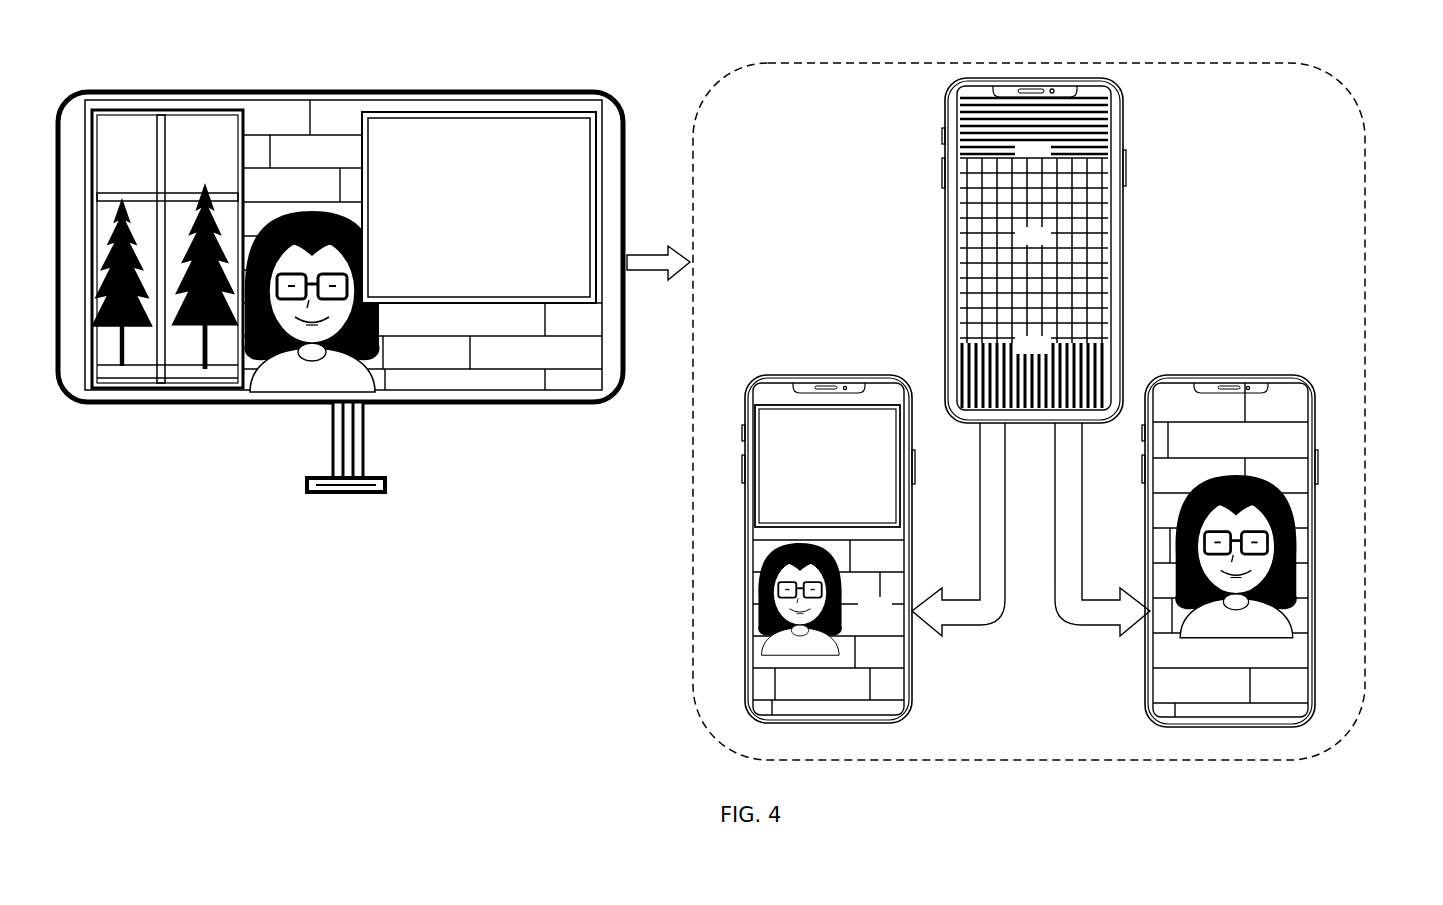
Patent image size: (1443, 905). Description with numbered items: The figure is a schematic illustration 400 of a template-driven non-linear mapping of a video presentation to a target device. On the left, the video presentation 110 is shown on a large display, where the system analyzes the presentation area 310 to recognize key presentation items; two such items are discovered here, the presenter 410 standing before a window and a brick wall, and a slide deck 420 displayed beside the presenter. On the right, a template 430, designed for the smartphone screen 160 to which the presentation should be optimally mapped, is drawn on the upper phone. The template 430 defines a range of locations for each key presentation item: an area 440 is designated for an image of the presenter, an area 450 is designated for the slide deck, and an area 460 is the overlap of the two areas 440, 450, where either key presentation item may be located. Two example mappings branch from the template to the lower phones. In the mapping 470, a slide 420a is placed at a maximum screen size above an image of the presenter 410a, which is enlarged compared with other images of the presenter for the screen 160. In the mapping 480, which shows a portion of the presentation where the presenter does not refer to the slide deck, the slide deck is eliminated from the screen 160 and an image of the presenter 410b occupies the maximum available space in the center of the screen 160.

The video presentation 110 is at (167, 249).
The presentation area 310 is at (422, 245).
The slide deck 420 is at (479, 207).
The presenter 410 is at (303, 372).
The schematic illustration 400 is at (1410, 112).
The smartphone screen 160 is at (942, 225).
The template 430 is at (1100, 137).
The area for the slide deck 450 is at (1034, 152).
The overlap area 460 is at (1034, 250).
The area for an image of the presenter 440 is at (1032, 372).
The image of the presenter 410a is at (765, 647).
The slide 420a is at (827, 466).
The mapping 470 is at (828, 627).
The image of the presenter 410b is at (1297, 637).
The mapping 480 is at (1230, 550).